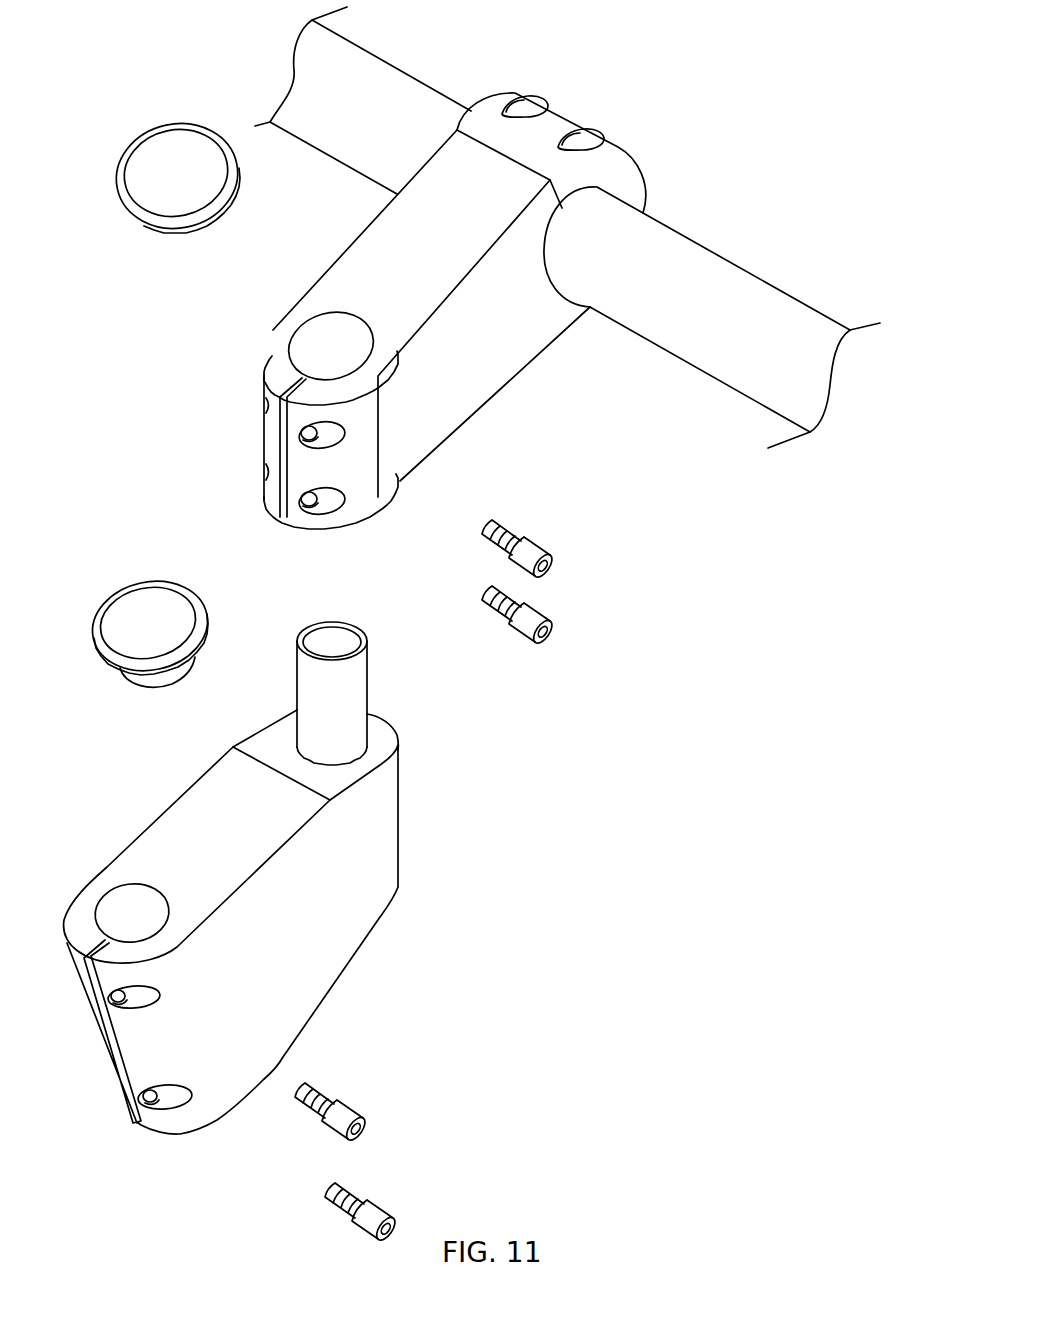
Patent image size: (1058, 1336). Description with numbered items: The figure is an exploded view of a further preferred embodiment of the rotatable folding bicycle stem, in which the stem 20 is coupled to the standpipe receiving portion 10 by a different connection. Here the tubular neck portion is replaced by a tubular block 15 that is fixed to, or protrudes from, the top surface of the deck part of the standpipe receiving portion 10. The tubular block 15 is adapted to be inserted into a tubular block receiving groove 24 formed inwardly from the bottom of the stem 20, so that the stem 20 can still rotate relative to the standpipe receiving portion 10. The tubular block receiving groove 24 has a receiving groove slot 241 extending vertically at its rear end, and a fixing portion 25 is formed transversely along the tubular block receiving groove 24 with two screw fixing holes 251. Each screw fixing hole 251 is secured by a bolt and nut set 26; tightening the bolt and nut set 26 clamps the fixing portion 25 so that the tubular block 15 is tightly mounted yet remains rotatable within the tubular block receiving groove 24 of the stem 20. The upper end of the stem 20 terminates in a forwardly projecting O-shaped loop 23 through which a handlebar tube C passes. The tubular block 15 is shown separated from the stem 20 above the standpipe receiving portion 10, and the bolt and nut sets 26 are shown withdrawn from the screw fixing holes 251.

The standpipe receiving portion 10 is at (403, 962).
The tubular block 15 is at (348, 701).
The stem 20 is at (411, 328).
The O-shaped loop 23 is at (540, 134).
The tubular block receiving groove 24 is at (314, 350).
The receiving groove slot 241 is at (278, 438).
The fixing portion 25 is at (270, 441).
The screw fixing holes 251 is at (312, 508).
The bolt and nut set 26 is at (592, 587).
The tube C is at (680, 264).